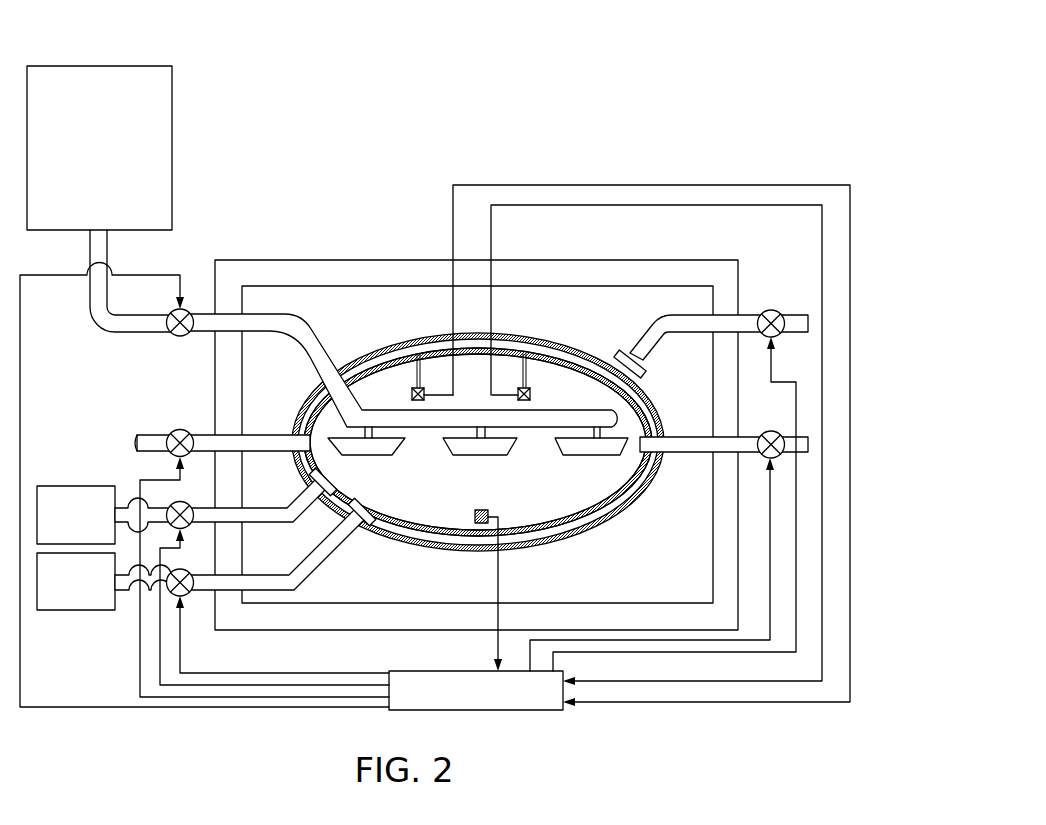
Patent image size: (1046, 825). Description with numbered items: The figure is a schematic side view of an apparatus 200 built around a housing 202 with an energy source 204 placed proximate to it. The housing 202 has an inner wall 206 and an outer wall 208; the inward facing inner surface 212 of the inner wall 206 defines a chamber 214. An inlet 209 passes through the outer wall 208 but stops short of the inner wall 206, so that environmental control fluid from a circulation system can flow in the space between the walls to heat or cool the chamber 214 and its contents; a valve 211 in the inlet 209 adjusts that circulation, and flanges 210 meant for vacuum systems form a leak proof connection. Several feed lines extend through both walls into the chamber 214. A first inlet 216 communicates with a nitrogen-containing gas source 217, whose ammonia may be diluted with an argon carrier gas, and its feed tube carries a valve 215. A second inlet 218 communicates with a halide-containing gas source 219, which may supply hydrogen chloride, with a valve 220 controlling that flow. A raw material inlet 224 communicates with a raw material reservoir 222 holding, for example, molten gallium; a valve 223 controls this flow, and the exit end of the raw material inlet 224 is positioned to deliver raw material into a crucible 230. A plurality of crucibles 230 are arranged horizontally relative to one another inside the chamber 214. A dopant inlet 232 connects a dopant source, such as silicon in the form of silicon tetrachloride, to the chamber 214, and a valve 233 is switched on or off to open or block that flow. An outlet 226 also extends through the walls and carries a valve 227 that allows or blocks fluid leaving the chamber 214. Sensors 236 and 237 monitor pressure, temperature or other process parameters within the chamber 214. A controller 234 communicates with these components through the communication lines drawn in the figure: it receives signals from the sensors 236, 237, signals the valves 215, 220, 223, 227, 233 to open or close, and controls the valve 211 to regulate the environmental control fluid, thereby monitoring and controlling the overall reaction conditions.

The apparatus 200 is at (676, 58).
The housing 202 is at (572, 553).
The energy source 204 is at (626, 268).
The inner wall 206 is at (332, 540).
The outer wall 208 is at (443, 551).
The inlet 209 is at (631, 352).
The flanges 210 is at (646, 376).
The valve 211 is at (774, 309).
The inner surface 212 is at (618, 480).
The chamber 214 is at (526, 508).
The valve 215 is at (194, 523).
The first inlet 216 is at (304, 496).
The nitrogen-containing gas source 217 is at (80, 485).
The second inlet 218 is at (313, 562).
The halide-containing gas source 219 is at (80, 610).
The valve 220 is at (188, 598).
The raw material reservoir 222 is at (173, 166).
The valve 223 is at (171, 334).
The raw material inlet 224 is at (267, 322).
The outlet 226 is at (681, 436).
The valve 227 is at (769, 429).
The crucibles 230 is at (480, 456).
The dopant inlet 232 is at (262, 436).
The valve 233 is at (181, 429).
The controller 234 is at (552, 712).
The sensor 236 is at (474, 516).
The sensor 237 is at (440, 365).